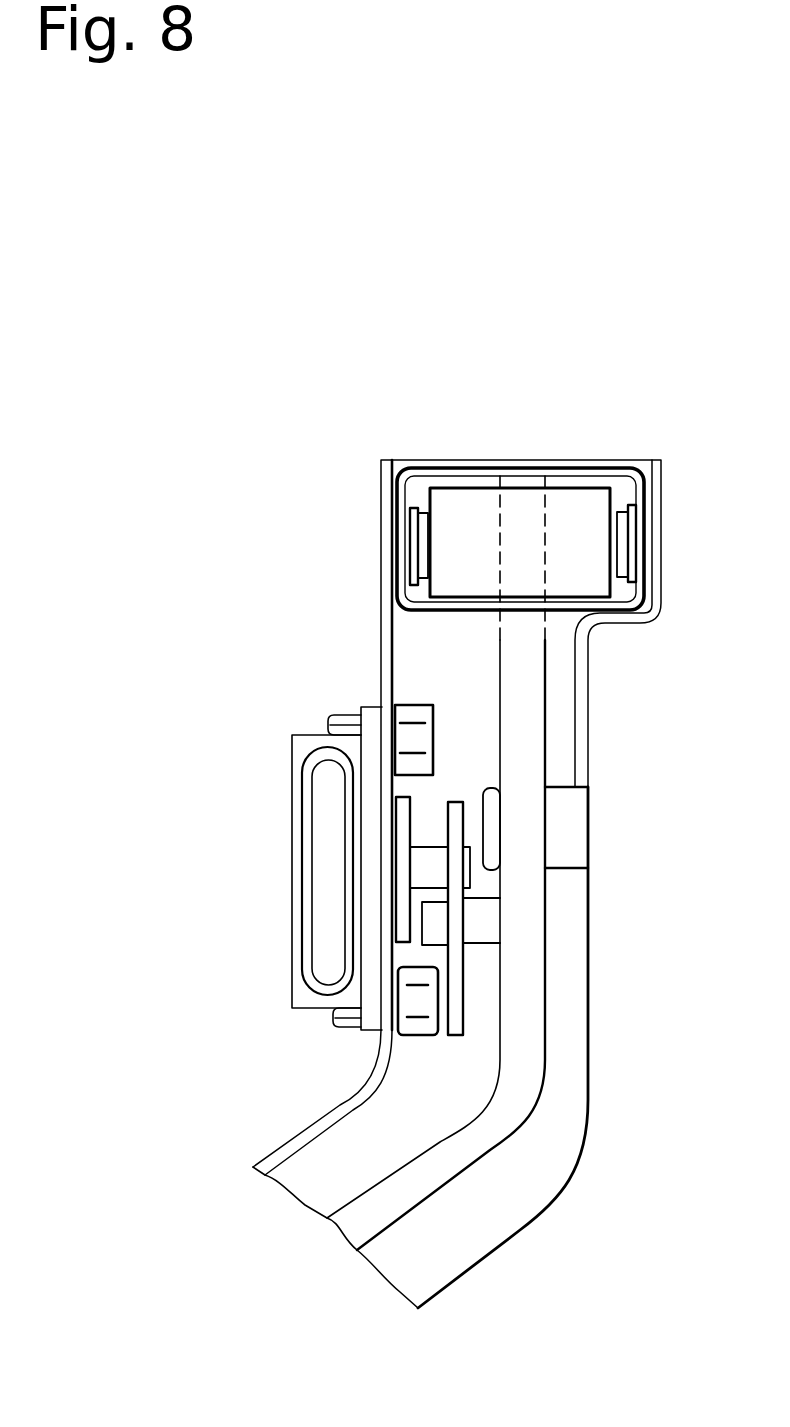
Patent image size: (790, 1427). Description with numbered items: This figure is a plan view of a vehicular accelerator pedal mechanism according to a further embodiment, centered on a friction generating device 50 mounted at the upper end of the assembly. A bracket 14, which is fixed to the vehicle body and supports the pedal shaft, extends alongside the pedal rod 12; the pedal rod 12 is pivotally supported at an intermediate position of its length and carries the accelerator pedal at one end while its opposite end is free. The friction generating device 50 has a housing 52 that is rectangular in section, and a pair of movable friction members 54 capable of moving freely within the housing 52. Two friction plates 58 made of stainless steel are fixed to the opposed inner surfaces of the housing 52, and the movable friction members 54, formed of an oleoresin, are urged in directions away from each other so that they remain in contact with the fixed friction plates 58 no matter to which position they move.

The friction generating device 50 is at (566, 447).
The housing 52 is at (467, 473).
The friction plates 58 is at (410, 521).
The movable friction members 54 is at (427, 557).
The bracket 14 is at (600, 731).
The pedal rod 12 is at (535, 958).